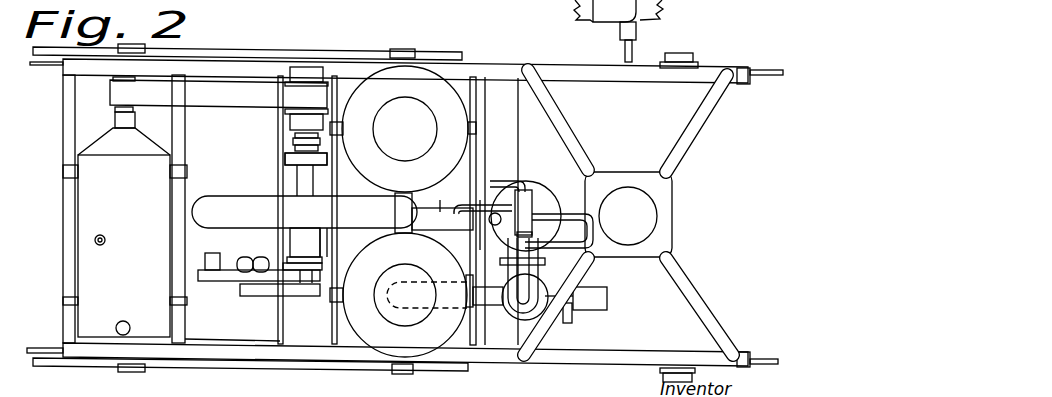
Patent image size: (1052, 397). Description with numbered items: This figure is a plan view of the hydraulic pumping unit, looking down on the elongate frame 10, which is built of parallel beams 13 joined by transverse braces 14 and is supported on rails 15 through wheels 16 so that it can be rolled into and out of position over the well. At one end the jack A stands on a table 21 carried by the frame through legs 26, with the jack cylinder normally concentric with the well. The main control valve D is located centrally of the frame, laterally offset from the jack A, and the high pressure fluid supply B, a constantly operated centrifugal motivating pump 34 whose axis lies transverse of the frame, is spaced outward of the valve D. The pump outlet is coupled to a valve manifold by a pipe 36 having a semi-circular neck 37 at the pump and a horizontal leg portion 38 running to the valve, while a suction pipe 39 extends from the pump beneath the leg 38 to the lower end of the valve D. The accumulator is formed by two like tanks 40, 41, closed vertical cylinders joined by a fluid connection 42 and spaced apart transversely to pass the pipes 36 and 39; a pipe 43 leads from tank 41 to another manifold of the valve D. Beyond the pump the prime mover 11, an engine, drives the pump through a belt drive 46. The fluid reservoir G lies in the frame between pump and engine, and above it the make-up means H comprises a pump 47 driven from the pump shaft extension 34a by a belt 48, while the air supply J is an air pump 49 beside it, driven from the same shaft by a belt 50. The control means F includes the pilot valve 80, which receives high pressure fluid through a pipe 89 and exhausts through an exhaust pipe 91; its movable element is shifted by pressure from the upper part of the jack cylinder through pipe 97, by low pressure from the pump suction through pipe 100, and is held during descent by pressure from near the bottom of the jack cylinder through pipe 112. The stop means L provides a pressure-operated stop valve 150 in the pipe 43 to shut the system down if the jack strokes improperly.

The frame 10 is at (545, 362).
The prime mover 11 is at (100, 207).
The beams 13 is at (508, 67).
The transverse braces 14 is at (68, 147).
The rails 15 is at (458, 52).
The wheels 16 is at (700, 47).
The table 21 is at (672, 250).
The legs 26 is at (703, 316).
The motivating pump 34 is at (296, 183).
The pump shaft 34a is at (312, 243).
The pipe 36 is at (224, 188).
The semi-circular neck 37 is at (213, 182).
The leg portion 38 is at (304, 212).
The pipe 39 is at (445, 203).
The tank 40 is at (403, 129).
The tank 41 is at (401, 295).
The fluid connection 42 is at (398, 213).
The pipe 43 is at (478, 303).
The belt drive 46 is at (221, 92).
The pump 47 is at (210, 255).
The belt 48 is at (230, 278).
The air pump 49 is at (260, 257).
The belt 50 is at (273, 297).
The pilot valve 80 is at (566, 192).
The pipe 89 is at (456, 210).
The exhaust pipe 91 is at (534, 213).
The pipe 97 is at (555, 262).
The pipe 100 is at (500, 182).
The pipe 112 is at (590, 212).
The stop valve 150 is at (565, 325).
The jack A is at (652, 214).
The high pressure fluid supply B is at (288, 160).
The main control valve D is at (546, 182).
The control means F is at (533, 188).
The fluid reservoir G is at (228, 325).
The make-up means H is at (202, 261).
The air supply J is at (248, 256).
The stop means L is at (492, 226).